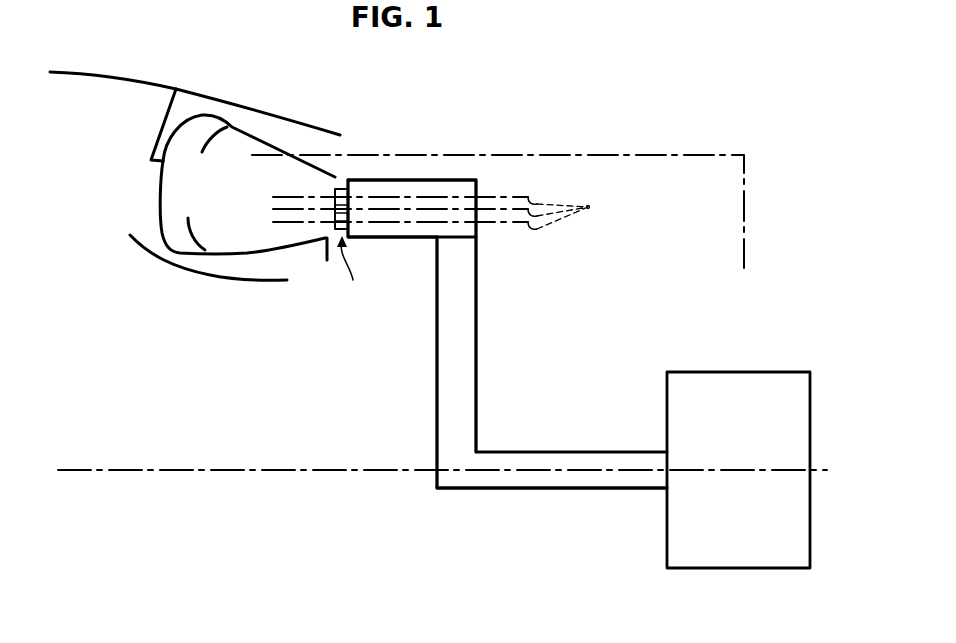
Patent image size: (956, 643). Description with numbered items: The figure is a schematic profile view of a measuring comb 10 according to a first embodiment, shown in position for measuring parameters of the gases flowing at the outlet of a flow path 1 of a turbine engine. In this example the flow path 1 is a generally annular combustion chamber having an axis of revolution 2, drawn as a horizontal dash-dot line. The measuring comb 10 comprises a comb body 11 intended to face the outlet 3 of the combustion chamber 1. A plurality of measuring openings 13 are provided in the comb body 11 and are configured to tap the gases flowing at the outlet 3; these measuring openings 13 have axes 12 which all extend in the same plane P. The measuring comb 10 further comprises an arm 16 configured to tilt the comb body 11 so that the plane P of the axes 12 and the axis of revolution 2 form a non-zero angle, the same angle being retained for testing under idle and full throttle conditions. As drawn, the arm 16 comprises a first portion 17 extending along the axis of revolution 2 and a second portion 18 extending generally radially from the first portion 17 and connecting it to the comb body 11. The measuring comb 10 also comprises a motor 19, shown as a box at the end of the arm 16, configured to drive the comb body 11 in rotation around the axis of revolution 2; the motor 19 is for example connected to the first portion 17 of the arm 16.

The flow path 1 is at (163, 287).
The axis of revolution 2 is at (128, 468).
The outlet 3 is at (330, 183).
The measuring comb 10 is at (545, 287).
The comb body 11 is at (400, 232).
The axes 12 is at (588, 207).
The measuring openings 13 is at (340, 193).
The arm 16 is at (437, 391).
The first portion 17 is at (550, 483).
The second portion 18 is at (462, 333).
The motor 19 is at (738, 557).
The plane P is at (745, 203).